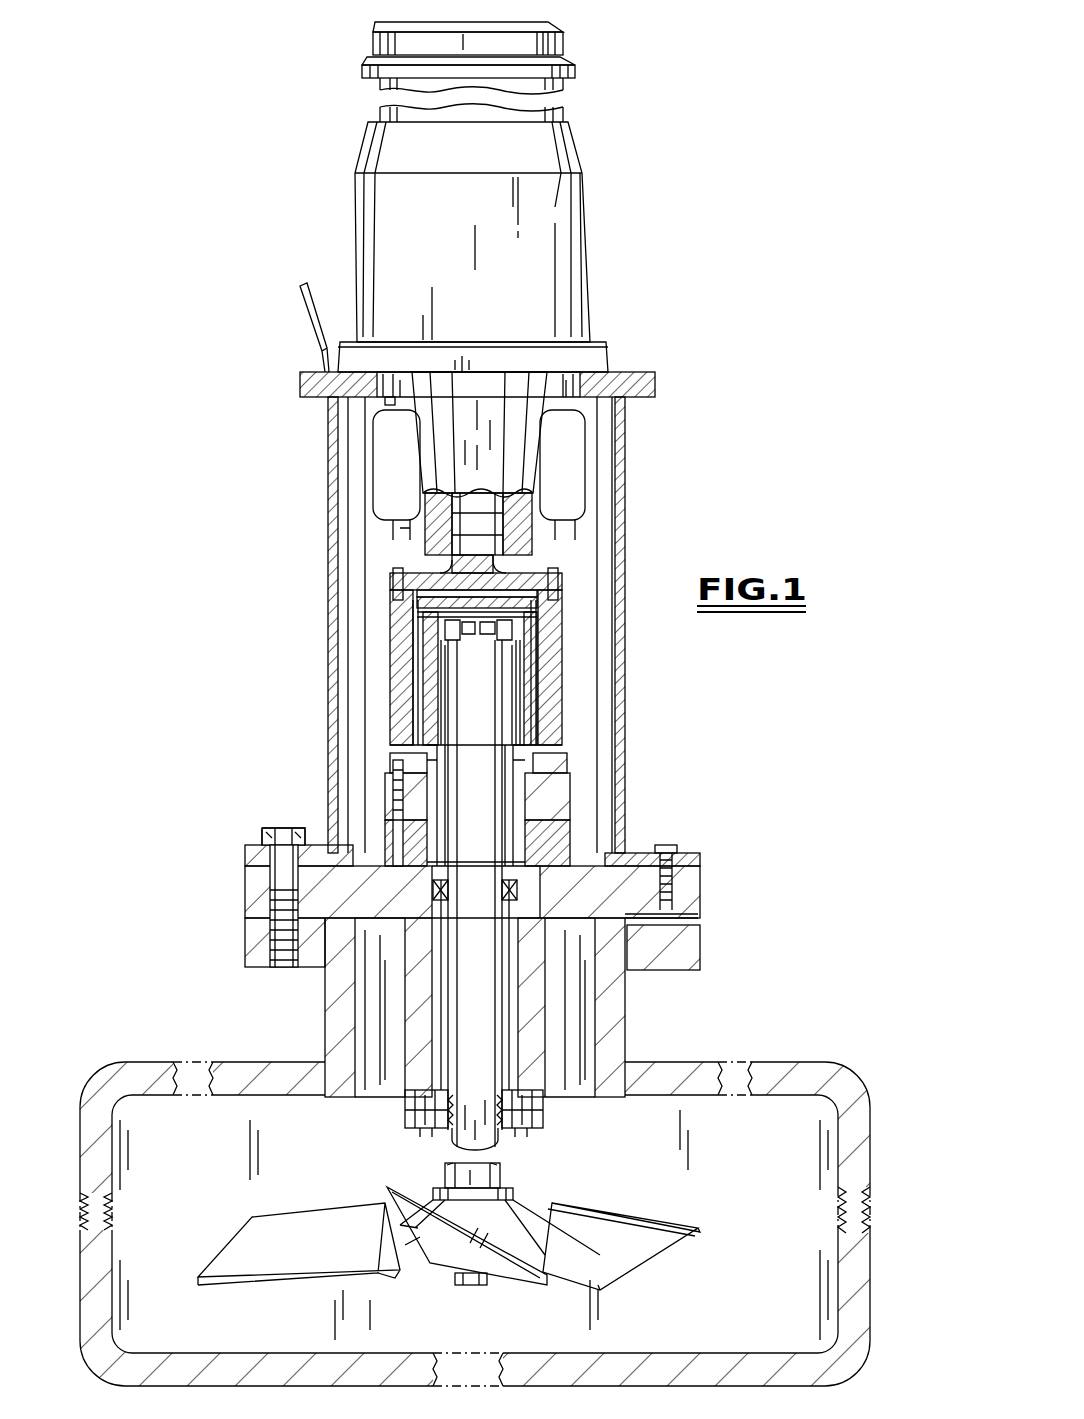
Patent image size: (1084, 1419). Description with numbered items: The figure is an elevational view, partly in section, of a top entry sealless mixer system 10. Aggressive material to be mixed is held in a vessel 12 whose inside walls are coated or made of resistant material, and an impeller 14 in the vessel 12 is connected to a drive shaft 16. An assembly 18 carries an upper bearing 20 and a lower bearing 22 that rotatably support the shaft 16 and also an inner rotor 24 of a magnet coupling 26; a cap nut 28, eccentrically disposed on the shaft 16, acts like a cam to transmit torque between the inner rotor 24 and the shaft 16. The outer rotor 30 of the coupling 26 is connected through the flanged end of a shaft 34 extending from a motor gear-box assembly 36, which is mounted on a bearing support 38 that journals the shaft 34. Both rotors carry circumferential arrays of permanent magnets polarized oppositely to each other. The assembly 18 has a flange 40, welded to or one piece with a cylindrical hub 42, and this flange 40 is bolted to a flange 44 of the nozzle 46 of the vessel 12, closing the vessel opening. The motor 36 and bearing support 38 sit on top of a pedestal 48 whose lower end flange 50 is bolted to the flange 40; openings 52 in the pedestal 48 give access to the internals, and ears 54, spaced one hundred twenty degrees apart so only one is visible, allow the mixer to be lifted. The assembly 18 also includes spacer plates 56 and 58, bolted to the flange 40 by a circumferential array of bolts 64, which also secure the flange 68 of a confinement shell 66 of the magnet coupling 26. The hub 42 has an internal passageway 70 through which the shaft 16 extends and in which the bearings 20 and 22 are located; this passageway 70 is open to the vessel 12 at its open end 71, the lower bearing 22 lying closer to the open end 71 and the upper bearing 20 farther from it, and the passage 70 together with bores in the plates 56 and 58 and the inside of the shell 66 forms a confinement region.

The top entry sealless mixer system 10 is at (196, 481).
The vessel 12 is at (872, 1295).
The impeller 14 is at (640, 1248).
The drive shaft 16 is at (465, 1130).
The assembly 18 is at (385, 788).
The upper bearing 20 is at (565, 855).
The lower bearing 22 is at (430, 1101).
The inner rotor 24 is at (525, 663).
The magnet coupling 26 is at (386, 626).
The cap nut 28 is at (525, 628).
The outer rotor 30 is at (560, 693).
The shaft 34 is at (470, 523).
The motor gear-box assembly 36 is at (592, 302).
The bearing support 38 is at (452, 442).
The flange 40 is at (692, 905).
The hub 42 is at (530, 1008).
The flange 44 is at (690, 960).
The nozzle 46 is at (327, 985).
The pedestal 48 is at (620, 530).
The lower end flange 50 is at (688, 858).
The openings 52 is at (578, 474).
The ears 54 is at (300, 288).
The spacer plate 56 is at (570, 790).
The spacer plate 58 is at (528, 822).
The bolts 64 is at (392, 803).
The confinement shell 66 is at (413, 693).
The flange 68 is at (568, 760).
The passageway 70 is at (440, 1013).
The open end 71 is at (505, 1123).